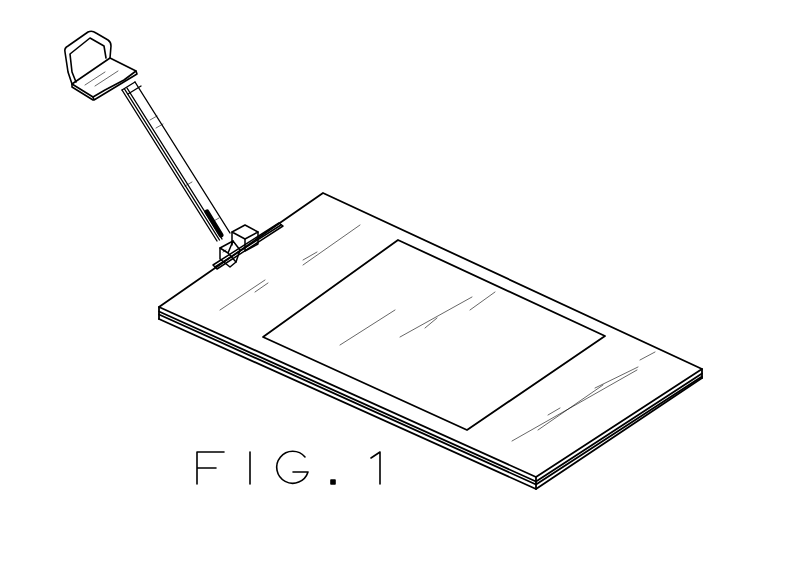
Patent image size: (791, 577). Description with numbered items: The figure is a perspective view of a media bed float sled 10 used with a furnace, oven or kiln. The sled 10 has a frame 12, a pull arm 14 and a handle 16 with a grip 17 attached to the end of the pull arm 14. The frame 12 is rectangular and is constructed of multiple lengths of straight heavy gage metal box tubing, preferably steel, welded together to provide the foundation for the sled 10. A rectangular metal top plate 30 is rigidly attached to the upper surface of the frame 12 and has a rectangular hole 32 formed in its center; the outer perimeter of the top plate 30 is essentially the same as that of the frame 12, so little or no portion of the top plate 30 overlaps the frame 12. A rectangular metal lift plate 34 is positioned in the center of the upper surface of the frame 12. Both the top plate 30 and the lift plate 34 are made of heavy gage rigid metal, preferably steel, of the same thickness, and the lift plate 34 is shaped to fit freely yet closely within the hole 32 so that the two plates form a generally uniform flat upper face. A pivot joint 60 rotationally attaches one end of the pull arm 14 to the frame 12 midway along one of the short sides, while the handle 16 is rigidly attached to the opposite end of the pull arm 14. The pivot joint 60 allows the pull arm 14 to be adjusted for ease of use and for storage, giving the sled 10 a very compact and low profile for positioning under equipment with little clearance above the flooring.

The sled 10 is at (473, 230).
The frame 12 is at (615, 437).
The pull arm 14 is at (182, 162).
The handle 16 is at (132, 57).
The grip 17 is at (100, 33).
The top plate 30 is at (647, 363).
The hole 32 is at (588, 323).
The lift plate 34 is at (523, 315).
The pivot joint 60 is at (217, 243).